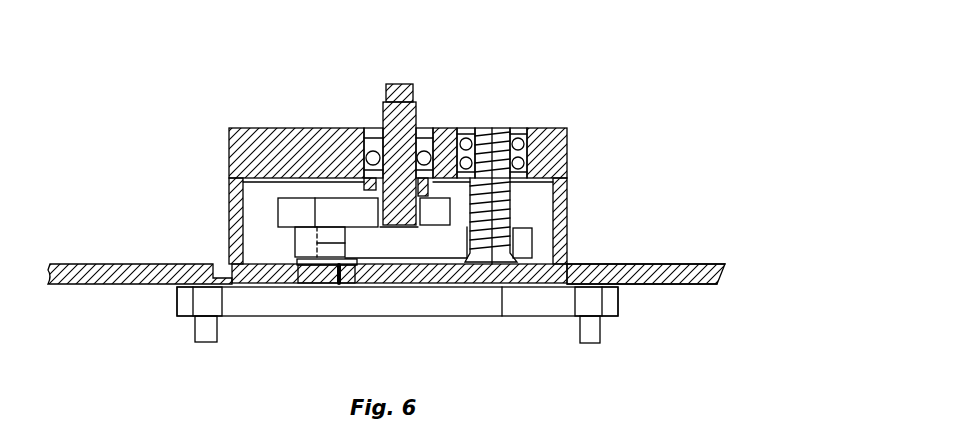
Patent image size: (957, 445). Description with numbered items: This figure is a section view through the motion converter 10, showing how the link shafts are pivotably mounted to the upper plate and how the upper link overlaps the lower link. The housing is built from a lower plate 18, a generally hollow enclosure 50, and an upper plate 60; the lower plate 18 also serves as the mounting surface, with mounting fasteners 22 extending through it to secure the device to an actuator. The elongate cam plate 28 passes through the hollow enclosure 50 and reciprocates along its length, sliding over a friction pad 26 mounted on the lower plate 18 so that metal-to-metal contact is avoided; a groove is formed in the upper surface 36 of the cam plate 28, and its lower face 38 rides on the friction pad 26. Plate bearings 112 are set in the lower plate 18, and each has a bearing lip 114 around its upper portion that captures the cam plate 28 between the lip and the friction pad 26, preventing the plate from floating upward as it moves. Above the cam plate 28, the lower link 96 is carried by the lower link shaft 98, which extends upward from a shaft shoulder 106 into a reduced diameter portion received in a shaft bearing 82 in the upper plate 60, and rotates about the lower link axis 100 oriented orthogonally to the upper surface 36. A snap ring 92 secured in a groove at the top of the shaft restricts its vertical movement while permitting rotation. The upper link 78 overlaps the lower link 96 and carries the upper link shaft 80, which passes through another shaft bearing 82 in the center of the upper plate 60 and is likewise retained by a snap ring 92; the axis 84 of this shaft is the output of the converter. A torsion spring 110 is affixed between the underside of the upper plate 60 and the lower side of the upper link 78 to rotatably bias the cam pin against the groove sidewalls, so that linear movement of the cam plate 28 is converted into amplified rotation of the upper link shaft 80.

The motion converter 10 is at (657, 154).
The lower plate 18 is at (620, 301).
The mounting fasteners 22 is at (195, 338).
The friction pad 26 is at (502, 316).
The cam plate 28 is at (88, 264).
The upper surface 36 is at (685, 263).
The panel bottom surface 38 is at (698, 285).
The hollow enclosure 50 is at (567, 211).
The upper plate 60 is at (568, 131).
The upper link 78 is at (364, 212).
The upper link shaft 80 is at (412, 97).
The shaft bearing 82 is at (368, 152).
The shaft axis 84 is at (399, 102).
The snap ring 92 is at (371, 132).
The lower link 96 is at (381, 242).
The lower link shaft 98 is at (493, 203).
The lower link axis 100 is at (492, 128).
The shaft shoulder 106 is at (503, 225).
The spring 110 is at (372, 186).
The plate bearings 112 is at (337, 283).
The bearing lip 114 is at (297, 261).